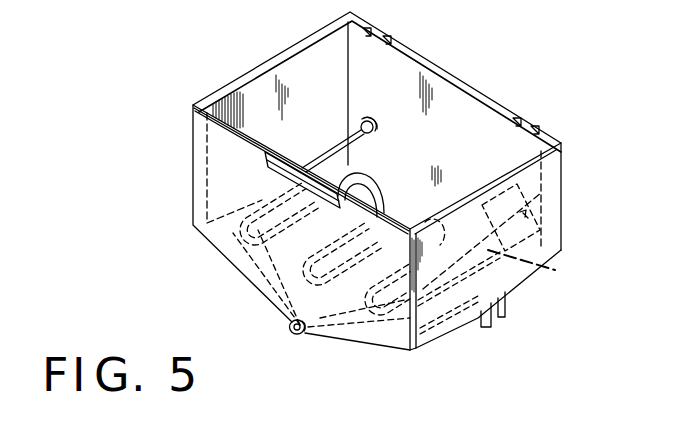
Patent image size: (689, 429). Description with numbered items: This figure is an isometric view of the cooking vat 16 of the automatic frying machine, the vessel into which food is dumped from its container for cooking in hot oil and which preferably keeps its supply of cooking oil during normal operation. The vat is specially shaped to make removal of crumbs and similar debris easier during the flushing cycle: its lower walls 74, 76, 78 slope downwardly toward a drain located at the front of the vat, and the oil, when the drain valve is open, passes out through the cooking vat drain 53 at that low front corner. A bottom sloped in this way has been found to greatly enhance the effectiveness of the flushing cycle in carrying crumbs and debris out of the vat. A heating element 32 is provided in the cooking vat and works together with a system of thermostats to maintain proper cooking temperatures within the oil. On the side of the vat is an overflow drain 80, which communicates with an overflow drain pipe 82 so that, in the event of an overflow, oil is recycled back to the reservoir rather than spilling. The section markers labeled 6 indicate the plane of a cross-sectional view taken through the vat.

The cooking vat 16 is at (221, 52).
The section line 6- 6 is at (570, 105).
The lower wall 74 is at (372, 161).
The lower wall 78 is at (232, 234).
The overflow drain 80 is at (520, 190).
The heating element 32 is at (555, 270).
The overflow drain pipe 82 is at (500, 318).
The cooking vat drain 53 is at (297, 336).
The lower wall 76 is at (397, 333).